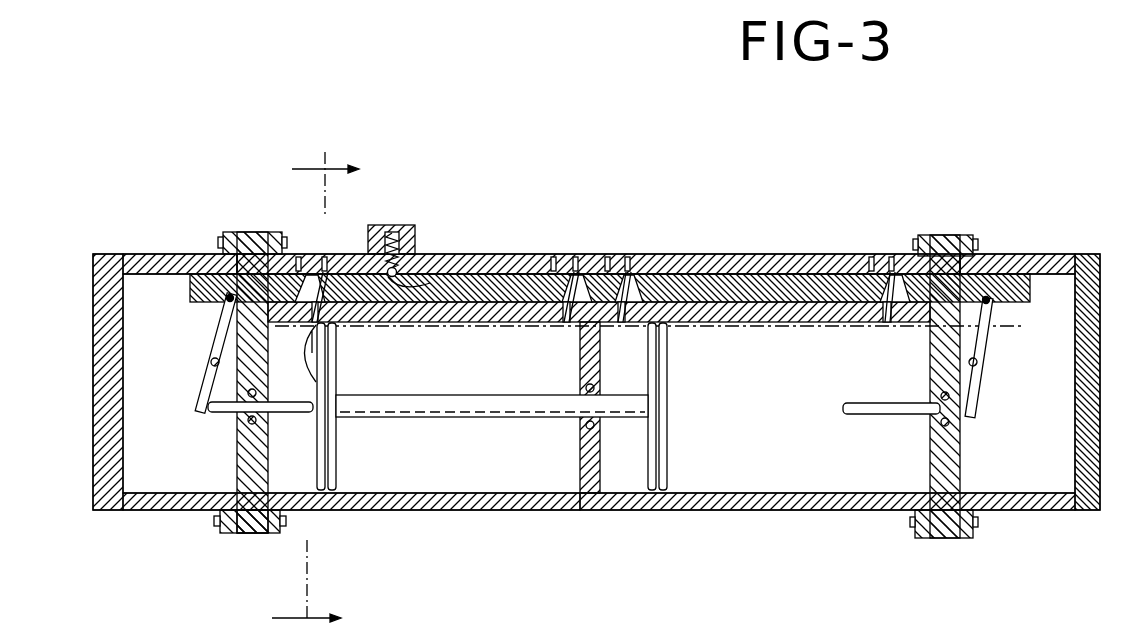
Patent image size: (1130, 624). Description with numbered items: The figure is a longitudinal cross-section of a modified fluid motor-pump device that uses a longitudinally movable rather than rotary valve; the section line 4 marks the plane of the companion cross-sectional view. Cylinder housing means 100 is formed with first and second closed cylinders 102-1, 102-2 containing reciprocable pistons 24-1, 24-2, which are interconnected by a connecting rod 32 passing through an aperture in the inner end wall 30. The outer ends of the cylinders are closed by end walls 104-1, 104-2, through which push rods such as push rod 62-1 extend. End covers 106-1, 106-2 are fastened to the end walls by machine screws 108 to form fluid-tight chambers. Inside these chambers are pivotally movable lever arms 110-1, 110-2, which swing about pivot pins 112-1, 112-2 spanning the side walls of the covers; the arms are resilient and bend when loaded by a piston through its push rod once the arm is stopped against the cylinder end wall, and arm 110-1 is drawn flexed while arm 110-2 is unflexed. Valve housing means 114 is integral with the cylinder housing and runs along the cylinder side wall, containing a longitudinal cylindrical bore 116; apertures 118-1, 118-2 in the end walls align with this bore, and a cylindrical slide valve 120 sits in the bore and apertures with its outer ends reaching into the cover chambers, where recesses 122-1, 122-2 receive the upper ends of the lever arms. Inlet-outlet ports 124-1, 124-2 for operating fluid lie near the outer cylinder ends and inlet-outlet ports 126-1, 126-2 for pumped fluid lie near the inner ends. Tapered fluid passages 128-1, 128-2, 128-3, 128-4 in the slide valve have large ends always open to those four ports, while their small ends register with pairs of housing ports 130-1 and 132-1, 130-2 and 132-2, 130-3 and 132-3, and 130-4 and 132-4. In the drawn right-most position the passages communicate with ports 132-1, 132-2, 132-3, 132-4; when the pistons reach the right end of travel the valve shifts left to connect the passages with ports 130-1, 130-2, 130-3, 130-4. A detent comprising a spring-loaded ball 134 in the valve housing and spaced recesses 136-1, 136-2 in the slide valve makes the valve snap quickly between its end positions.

The section line 4- 4 is at (304, 388).
The piston 24-1 is at (337, 465).
The piston 24-2 is at (672, 467).
The inner end wall 30 is at (580, 460).
The connecting rod 32 is at (440, 420).
The push rod 62-1 is at (217, 413).
The cylinder housing means 100 is at (556, 507).
The first closed cylinder 102-1 is at (492, 494).
The second closed cylinder 102-2 is at (800, 494).
The end wall 104-1 is at (247, 533).
The end wall 104-2 is at (946, 540).
The end cover 106-1 is at (138, 513).
The end cover 106-2 is at (1040, 512).
The machine screws 108 is at (212, 522).
The lever arm 110-1 is at (206, 369).
The lever arm 110-2 is at (980, 384).
The pivot pin 112-1 is at (211, 361).
The pivot pin 112-2 is at (977, 362).
The valve housing means 114 is at (762, 264).
The cylindrical bore 116 is at (789, 258).
The aperture 118-1 is at (200, 256).
The aperture 118-2 is at (983, 272).
The slide valve 120 is at (742, 293).
The recess 122-1 is at (224, 301).
The recess 122-2 is at (988, 304).
The inlet-outlet port 124-1 is at (336, 372).
The inlet-outlet port 124-2 is at (884, 305).
The inlet-outlet port 126-1 is at (575, 314).
The inlet-outlet port 126-2 is at (627, 293).
The tapered fluid passage 128-1 is at (333, 306).
The tapered fluid passage 128-2 is at (567, 318).
The tapered fluid passage 128-3 is at (645, 285).
The tapered fluid passage 128-4 is at (900, 320).
The port 130-1 is at (297, 257).
The port 130-2 is at (553, 256).
The port 130-3 is at (608, 256).
The port 130-4 is at (872, 262).
The port 132-1 is at (323, 256).
The port 132-2 is at (575, 256).
The port 132-3 is at (628, 256).
The port 132-4 is at (891, 262).
The spring-loaded ball 134 is at (418, 249).
The recess 136-1 is at (447, 264).
The recess 136-2 is at (425, 283).